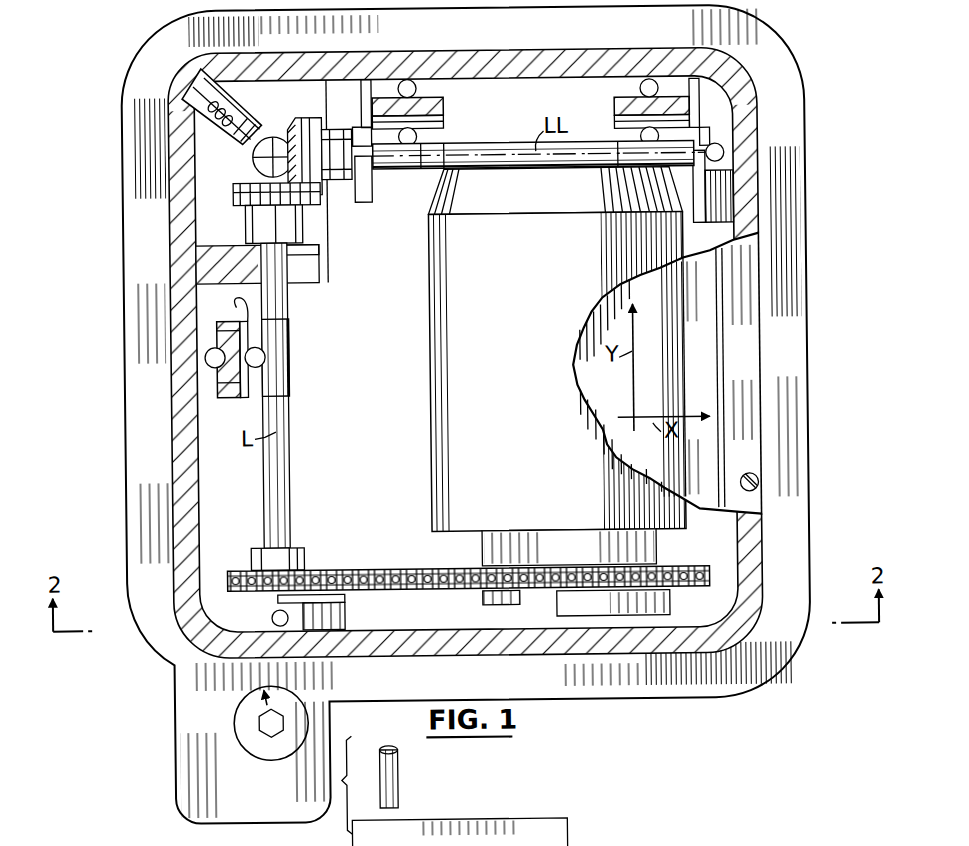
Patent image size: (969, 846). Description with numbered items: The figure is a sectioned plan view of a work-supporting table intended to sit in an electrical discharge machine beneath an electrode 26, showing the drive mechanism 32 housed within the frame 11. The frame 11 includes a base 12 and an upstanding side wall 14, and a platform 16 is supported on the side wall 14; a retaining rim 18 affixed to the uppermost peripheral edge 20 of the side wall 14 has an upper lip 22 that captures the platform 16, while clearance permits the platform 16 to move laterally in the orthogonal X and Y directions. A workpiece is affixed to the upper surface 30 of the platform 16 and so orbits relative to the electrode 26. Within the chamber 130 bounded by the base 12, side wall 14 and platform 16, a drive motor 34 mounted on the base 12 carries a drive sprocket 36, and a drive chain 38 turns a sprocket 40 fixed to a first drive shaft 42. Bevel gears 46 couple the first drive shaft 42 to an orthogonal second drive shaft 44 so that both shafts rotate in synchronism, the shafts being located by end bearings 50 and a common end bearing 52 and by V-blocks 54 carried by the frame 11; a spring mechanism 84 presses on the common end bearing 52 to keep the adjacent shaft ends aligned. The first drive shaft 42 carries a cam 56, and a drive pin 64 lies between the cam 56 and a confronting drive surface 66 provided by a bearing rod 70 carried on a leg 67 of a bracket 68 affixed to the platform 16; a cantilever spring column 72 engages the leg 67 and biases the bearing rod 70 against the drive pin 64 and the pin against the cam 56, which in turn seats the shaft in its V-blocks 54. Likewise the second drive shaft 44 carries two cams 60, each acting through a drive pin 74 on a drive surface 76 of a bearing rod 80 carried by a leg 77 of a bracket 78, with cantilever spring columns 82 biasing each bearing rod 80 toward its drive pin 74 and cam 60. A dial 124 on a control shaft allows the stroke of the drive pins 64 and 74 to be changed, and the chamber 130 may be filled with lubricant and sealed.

The frame 11 is at (146, 349).
The base 12 is at (130, 481).
The side wall 14 is at (171, 440).
The platform 16 is at (646, 290).
The retaining rim 18 is at (742, 321).
The uppermost peripheral edge 20 is at (752, 546).
The upper lip 22 is at (733, 370).
The electrode 26 is at (392, 763).
The upper surface 30 is at (690, 357).
The drive mechanism 32 is at (428, 431).
The drive motor 34 is at (430, 469).
The drive sprocket 36 is at (665, 605).
The drive chain 38 is at (436, 592).
The sprocket 40 is at (295, 564).
The first drive shaft 42 is at (262, 484).
The second drive shaft 44 is at (521, 146).
The bevel gears 46 is at (300, 212).
The end bearing 50 is at (726, 153).
The common end bearing 52 is at (280, 135).
The V-blocks 54 is at (364, 203).
The cam 56 is at (290, 348).
The cams 60 is at (418, 169).
The drive pin 64 is at (250, 395).
The drive surface 66 is at (252, 315).
The leg 67 is at (222, 380).
The bracket 68 is at (217, 328).
The bearing rod 70 is at (240, 319).
The cantilever spring column 72 is at (212, 357).
The drive pin 74 is at (420, 136).
The drive surface 76 is at (360, 128).
The leg 77 is at (447, 102).
The bracket 78 is at (443, 98).
The bearing rod 80 is at (365, 106).
The cantilever spring column 82 is at (428, 76).
The spring mechanism 84 is at (241, 160).
The dial 124 is at (252, 732).
The chamber 130 is at (375, 406).